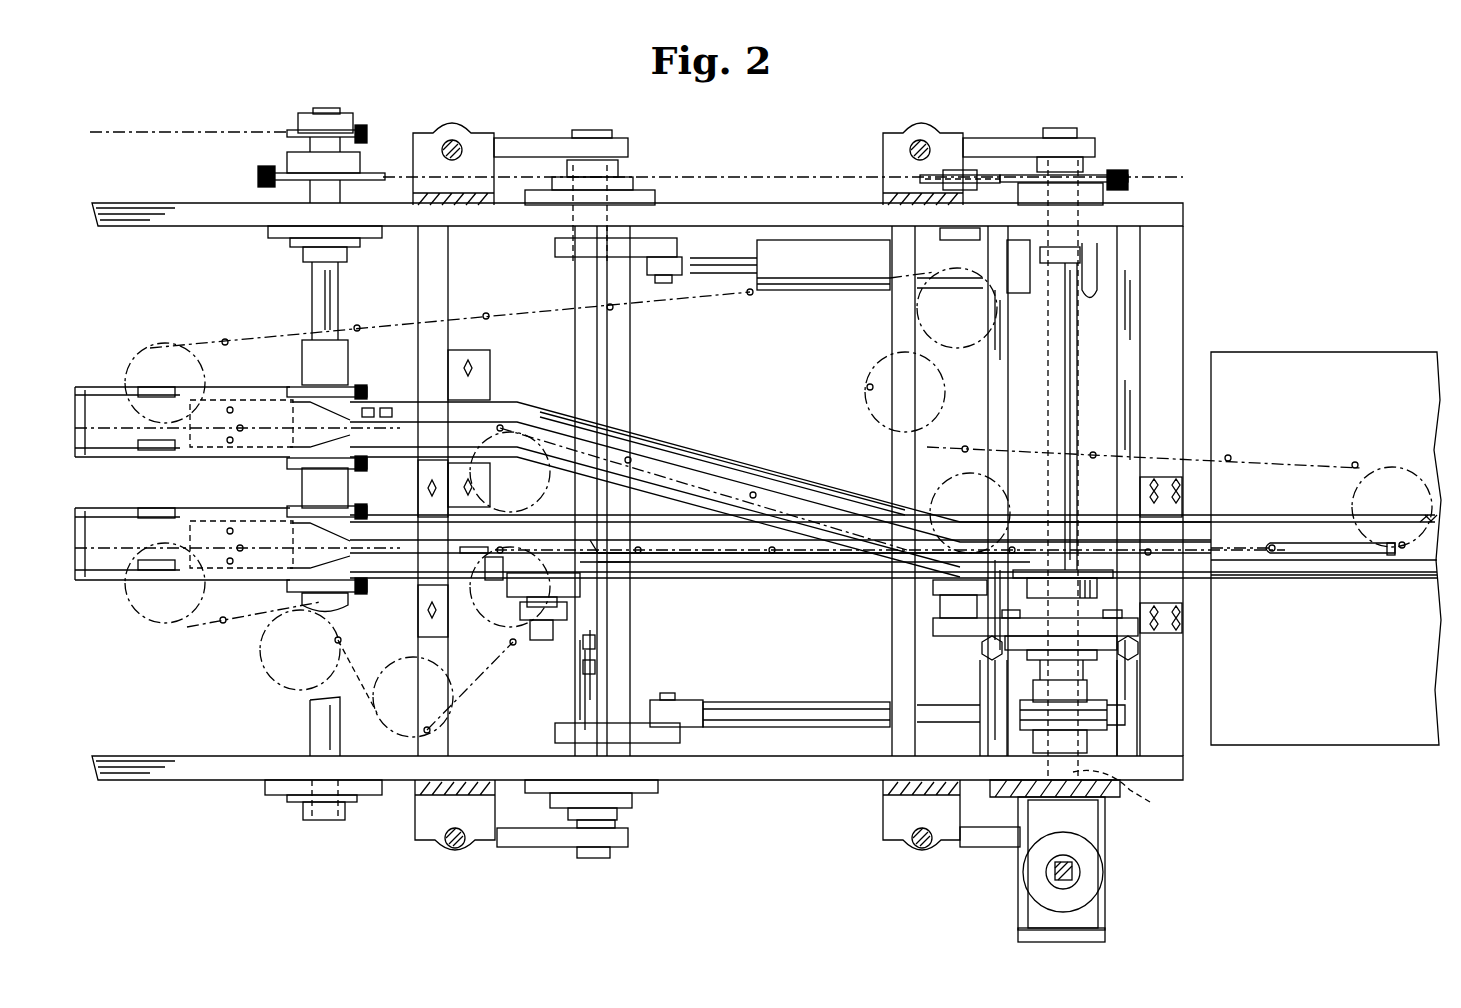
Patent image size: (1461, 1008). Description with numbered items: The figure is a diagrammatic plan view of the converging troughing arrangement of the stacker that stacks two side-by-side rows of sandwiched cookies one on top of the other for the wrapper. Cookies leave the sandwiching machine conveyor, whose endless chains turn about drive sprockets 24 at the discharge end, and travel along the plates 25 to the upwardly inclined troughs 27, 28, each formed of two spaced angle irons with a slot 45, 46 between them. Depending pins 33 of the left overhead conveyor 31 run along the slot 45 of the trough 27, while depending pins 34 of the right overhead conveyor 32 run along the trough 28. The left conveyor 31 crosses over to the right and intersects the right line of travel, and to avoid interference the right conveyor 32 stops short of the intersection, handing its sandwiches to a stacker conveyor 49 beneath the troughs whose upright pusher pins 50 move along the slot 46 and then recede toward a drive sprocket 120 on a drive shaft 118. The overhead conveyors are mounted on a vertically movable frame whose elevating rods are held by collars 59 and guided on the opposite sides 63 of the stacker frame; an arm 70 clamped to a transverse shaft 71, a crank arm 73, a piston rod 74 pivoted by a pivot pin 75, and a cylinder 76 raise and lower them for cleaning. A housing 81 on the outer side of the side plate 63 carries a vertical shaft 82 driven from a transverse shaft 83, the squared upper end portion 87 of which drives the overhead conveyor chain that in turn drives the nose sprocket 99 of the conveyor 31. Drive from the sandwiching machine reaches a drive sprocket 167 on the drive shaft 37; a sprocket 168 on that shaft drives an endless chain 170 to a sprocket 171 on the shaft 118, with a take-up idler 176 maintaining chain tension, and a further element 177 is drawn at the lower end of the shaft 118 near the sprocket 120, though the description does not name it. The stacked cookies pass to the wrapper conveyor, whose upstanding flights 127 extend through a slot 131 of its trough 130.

The drive sprockets 24 is at (300, 390).
The plates 25 is at (105, 418).
The trough 27 is at (395, 400).
The trough 28 is at (405, 578).
The overhead conveyor 31 is at (222, 345).
The overhead conveyor 32 is at (478, 690).
The depending pins 33 is at (628, 458).
The depending pins 34 is at (497, 552).
The drive shaft 37 is at (312, 295).
The slot 45 is at (668, 460).
The slot 46 is at (732, 558).
The stacker conveyor 49 is at (498, 580).
The upright pusher pins 50 is at (648, 555).
The collars 59 is at (505, 548).
The sides of the frame structure 63 is at (1170, 205).
The arm 70 is at (522, 140).
The transverse shaft 71 is at (573, 334).
The crank arm 73 is at (555, 247).
The piston rod 74 is at (730, 265).
The pivot pin 75 is at (665, 283).
The cylinder 76 is at (850, 290).
The housing 81 is at (1105, 916).
The vertical shaft 82 is at (1080, 862).
The transverse shaft 83 is at (910, 756).
The squared upper end portion 87 is at (1075, 870).
The nose sprocket 99 is at (1352, 502).
The drive shaft 118 is at (1070, 368).
The drive sprocket 120 is at (1083, 570).
The flights 127 is at (1392, 558).
The trough 130 is at (1283, 578).
The slot 131 is at (1322, 556).
The drive sprocket 167 is at (290, 133).
The sprocket 168 is at (372, 175).
The endless chain 170 is at (790, 175).
The sprocket 171 is at (1098, 172).
The take-up idler 176 is at (985, 175).
The hub 177 is at (1105, 707).